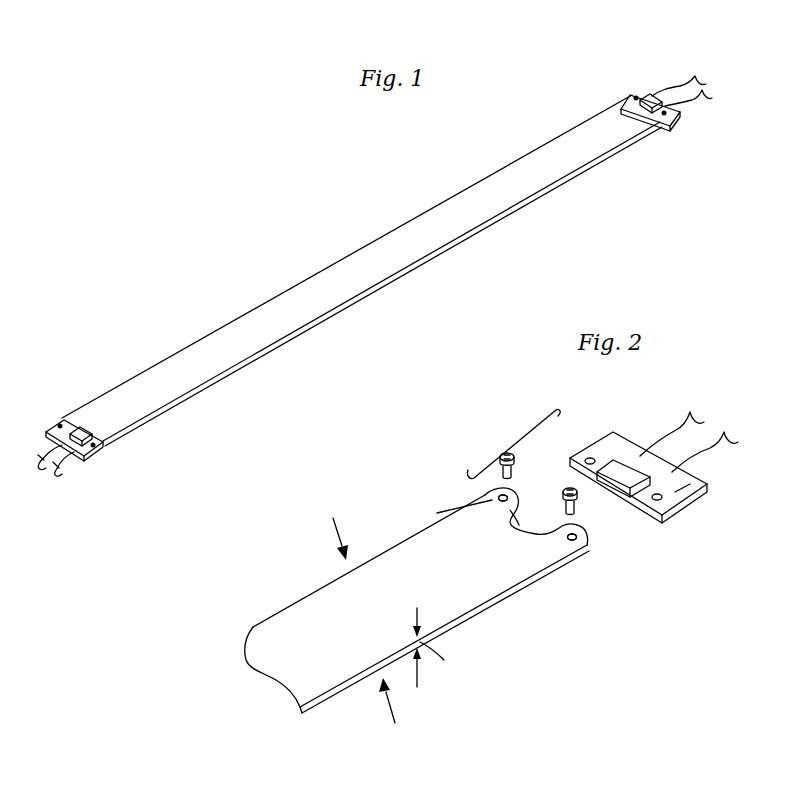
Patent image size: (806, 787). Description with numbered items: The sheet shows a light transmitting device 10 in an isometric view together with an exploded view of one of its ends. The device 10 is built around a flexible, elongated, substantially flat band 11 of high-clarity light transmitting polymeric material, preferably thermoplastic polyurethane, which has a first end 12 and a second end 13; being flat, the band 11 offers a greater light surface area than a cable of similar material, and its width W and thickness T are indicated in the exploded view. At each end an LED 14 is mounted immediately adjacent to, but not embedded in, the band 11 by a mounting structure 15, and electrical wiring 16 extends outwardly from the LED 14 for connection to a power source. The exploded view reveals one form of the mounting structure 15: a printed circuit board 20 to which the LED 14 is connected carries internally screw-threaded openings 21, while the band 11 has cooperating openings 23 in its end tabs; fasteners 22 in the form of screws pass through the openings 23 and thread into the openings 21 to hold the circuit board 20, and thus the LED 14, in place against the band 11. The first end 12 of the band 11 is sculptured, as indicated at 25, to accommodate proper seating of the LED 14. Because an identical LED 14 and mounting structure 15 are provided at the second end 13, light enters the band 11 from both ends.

In FIG. 1, the light transmitting device 10 is at (104, 470).
In FIG. 2, the light transmitting device 10 is at (451, 420).
In FIG. 1, the band 11 is at (381, 270).
In FIG. 2, the band 11 is at (462, 585).
In FIG. 1, the first end 12 is at (626, 76).
In FIG. 2, the first end 12 is at (624, 536).
In FIG. 1, the second end 13 is at (66, 400).
In FIG. 1, the LED 14 is at (80, 427).
In FIG. 2, the LED 14 is at (622, 468).
In FIG. 1, the mounting structure 15 is at (686, 142).
In FIG. 2, the mounting structure 15 is at (512, 428).
In FIG. 1, the electrical wiring 16 is at (62, 474).
In FIG. 2, the electrical wiring 16 is at (724, 432).
In FIG. 1, the printed circuit board 20 is at (60, 432).
In FIG. 2, the printed circuit board 20 is at (700, 484).
In FIG. 2, the openings 21 is at (590, 458).
In FIG. 2, the fasteners 22 is at (566, 504).
In FIG. 2, the openings 23 is at (500, 497).
In FIG. 2, the sculptured portion 25 is at (437, 513).